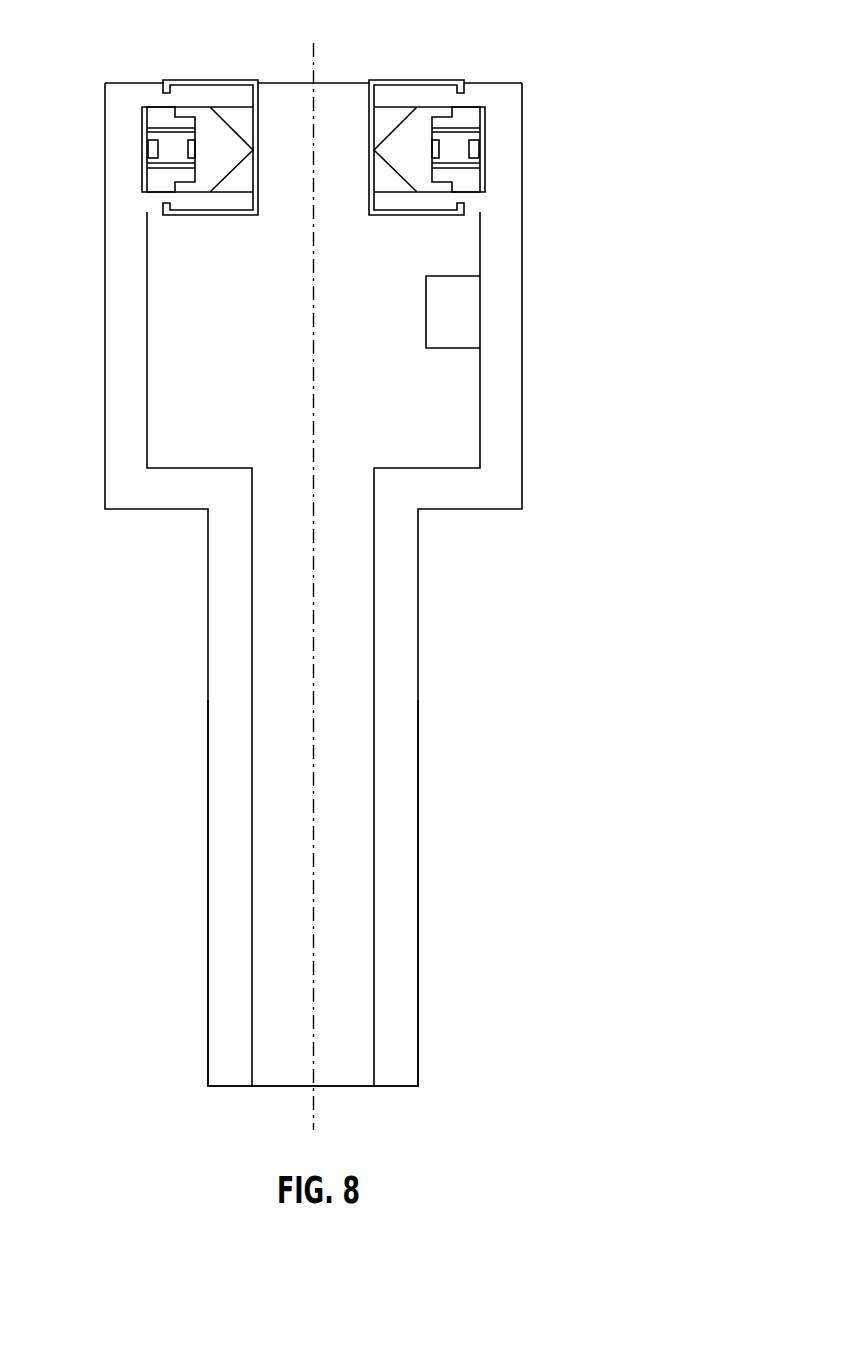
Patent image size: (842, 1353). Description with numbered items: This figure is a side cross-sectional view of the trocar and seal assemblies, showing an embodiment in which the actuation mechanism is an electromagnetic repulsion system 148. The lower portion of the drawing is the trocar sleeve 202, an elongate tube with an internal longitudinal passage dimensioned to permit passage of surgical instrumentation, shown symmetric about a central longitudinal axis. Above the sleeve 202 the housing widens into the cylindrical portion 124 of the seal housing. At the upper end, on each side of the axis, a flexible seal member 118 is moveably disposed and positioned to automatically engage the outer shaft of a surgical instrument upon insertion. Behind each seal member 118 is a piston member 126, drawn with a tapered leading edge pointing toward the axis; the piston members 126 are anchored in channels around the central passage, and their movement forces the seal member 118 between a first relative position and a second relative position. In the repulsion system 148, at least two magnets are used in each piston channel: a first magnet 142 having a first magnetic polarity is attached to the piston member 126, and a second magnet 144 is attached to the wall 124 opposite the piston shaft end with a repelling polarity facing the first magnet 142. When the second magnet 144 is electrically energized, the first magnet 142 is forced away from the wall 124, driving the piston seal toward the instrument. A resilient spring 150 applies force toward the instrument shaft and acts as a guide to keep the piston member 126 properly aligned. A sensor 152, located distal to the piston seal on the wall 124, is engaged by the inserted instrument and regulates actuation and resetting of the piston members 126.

The flexible seal member 118 is at (198, 80).
The cylindrical portion 124 is at (522, 366).
The piston member 126 is at (238, 161).
The first magnet 142 is at (188, 152).
The second magnet 144 is at (145, 148).
The electromagnetic repulsion system 148 is at (607, 93).
The resilient spring 150 is at (162, 128).
The sensor 152 is at (473, 323).
The trocar sleeve 202 is at (418, 682).